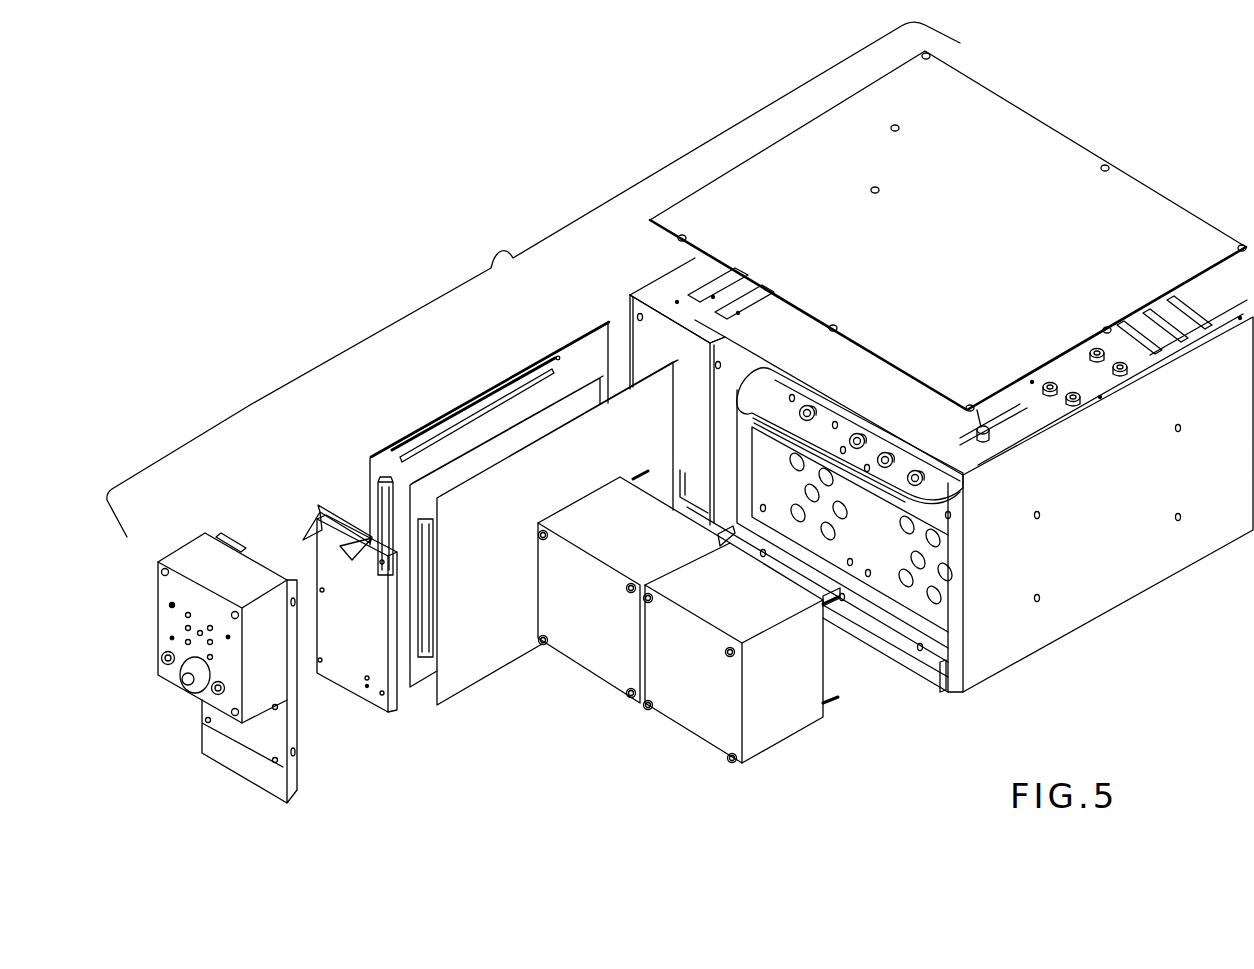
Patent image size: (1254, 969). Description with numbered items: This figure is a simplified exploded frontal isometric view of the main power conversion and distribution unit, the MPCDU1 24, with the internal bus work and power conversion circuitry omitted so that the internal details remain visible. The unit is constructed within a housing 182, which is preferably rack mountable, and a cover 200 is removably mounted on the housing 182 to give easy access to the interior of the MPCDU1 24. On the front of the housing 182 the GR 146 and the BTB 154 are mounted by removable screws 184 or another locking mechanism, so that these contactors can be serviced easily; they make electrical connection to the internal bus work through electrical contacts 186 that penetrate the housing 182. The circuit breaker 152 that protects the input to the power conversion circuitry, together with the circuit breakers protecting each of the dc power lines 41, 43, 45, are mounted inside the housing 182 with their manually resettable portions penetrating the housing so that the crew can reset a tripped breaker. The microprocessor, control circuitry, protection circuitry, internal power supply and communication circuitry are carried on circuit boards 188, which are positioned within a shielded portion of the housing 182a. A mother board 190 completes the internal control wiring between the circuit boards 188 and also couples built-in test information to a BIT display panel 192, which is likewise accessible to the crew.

The MPCDU1 24 is at (500, 252).
The cover 200 is at (1005, 224).
The housing 182 is at (1150, 577).
The shielded portion of the housing 182a is at (641, 258).
The circuit breaker protecting the input to the power conversion circuitry 152 is at (808, 410).
The dc power line circuit breaker 41 is at (856, 437).
The dc power line circuit breaker 43 is at (886, 456).
The dc power line circuit breaker 45 is at (915, 474).
The electrical contacts 186 is at (828, 545).
The circuit boards 188 is at (553, 430).
The mother board 190 is at (316, 523).
The BIT display panel 192 is at (175, 556).
The GR 146 is at (563, 660).
The BTB 154 is at (762, 748).
The removable screws 184 is at (724, 758).